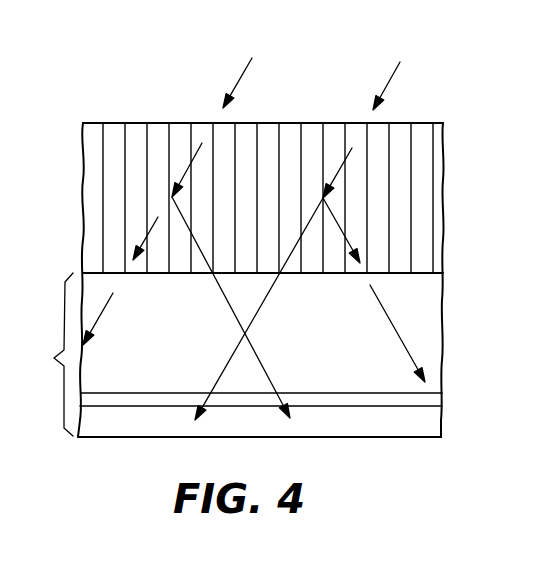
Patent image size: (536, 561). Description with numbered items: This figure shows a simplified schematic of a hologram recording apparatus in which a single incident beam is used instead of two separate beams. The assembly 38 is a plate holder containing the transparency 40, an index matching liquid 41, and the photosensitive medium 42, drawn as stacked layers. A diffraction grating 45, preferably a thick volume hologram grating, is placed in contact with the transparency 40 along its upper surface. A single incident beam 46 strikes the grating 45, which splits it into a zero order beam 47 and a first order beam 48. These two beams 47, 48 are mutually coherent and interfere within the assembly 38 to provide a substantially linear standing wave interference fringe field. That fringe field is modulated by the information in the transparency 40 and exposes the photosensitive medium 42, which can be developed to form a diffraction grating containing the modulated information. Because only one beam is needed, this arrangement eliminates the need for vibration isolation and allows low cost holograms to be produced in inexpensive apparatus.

The assembly 38 is at (46, 354).
The transparency 40 is at (434, 297).
The index matching liquid 41 is at (434, 402).
The photosensitive medium 42 is at (395, 423).
The diffraction grating 45 is at (427, 130).
The incident beam 46 is at (243, 71).
The zero order beam 47 is at (105, 312).
The first order beam 48 is at (221, 297).